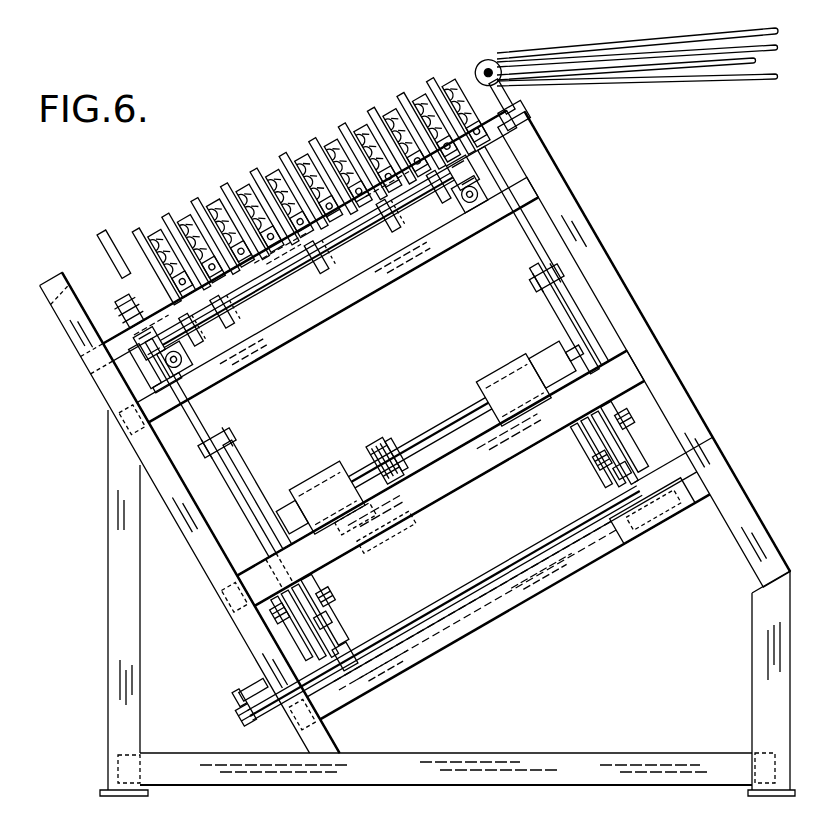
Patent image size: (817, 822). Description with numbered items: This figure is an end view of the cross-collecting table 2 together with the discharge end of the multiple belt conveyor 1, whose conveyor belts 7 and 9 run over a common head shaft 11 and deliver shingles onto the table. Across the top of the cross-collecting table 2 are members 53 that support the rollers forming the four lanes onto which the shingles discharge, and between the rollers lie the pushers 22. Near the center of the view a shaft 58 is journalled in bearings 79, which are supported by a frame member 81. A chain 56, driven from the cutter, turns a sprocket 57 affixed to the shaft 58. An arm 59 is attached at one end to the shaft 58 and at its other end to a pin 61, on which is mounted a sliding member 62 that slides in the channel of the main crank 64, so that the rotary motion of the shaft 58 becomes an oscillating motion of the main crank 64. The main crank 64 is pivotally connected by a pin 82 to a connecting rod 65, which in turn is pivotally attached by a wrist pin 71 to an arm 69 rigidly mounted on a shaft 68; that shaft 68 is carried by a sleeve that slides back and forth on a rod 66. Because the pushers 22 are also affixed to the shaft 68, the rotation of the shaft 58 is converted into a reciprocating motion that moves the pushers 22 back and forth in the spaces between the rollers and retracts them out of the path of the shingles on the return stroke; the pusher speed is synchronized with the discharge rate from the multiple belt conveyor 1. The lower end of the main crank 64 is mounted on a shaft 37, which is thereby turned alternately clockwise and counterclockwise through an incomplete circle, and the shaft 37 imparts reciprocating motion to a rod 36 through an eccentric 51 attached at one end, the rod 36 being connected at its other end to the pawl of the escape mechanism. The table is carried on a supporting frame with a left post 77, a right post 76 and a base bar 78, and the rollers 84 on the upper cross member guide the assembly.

The multiple belt conveyor 1 is at (691, 94).
The cross-collecting table 2 is at (648, 299).
The conveyor belt 7 is at (748, 38).
The conveyor belt 9 is at (765, 80).
The common head shaft 11 is at (478, 60).
The pushers 22 is at (141, 232).
The rod 36 is at (257, 730).
The shaft 37 is at (490, 583).
The eccentric 51 is at (246, 692).
The members 53 is at (118, 240).
The chain 56 is at (385, 450).
The sprocket 57 is at (394, 450).
The shaft 58 is at (453, 410).
The arm 59 is at (316, 578).
The pin 61 is at (326, 593).
The sliding member 62 is at (321, 623).
The main crank 64 is at (238, 480).
The connecting rod 65 is at (198, 427).
The rod 66 is at (162, 341).
The shaft 68 is at (352, 233).
The arm 69 is at (143, 352).
The wrist pin 71 is at (113, 310).
The right post 76 is at (752, 662).
The left post 77 is at (111, 623).
The base bar 78 is at (596, 752).
The bearings 79 is at (319, 484).
The frame member 81 is at (480, 476).
The pin 82 is at (219, 460).
The roller 84 is at (190, 358).